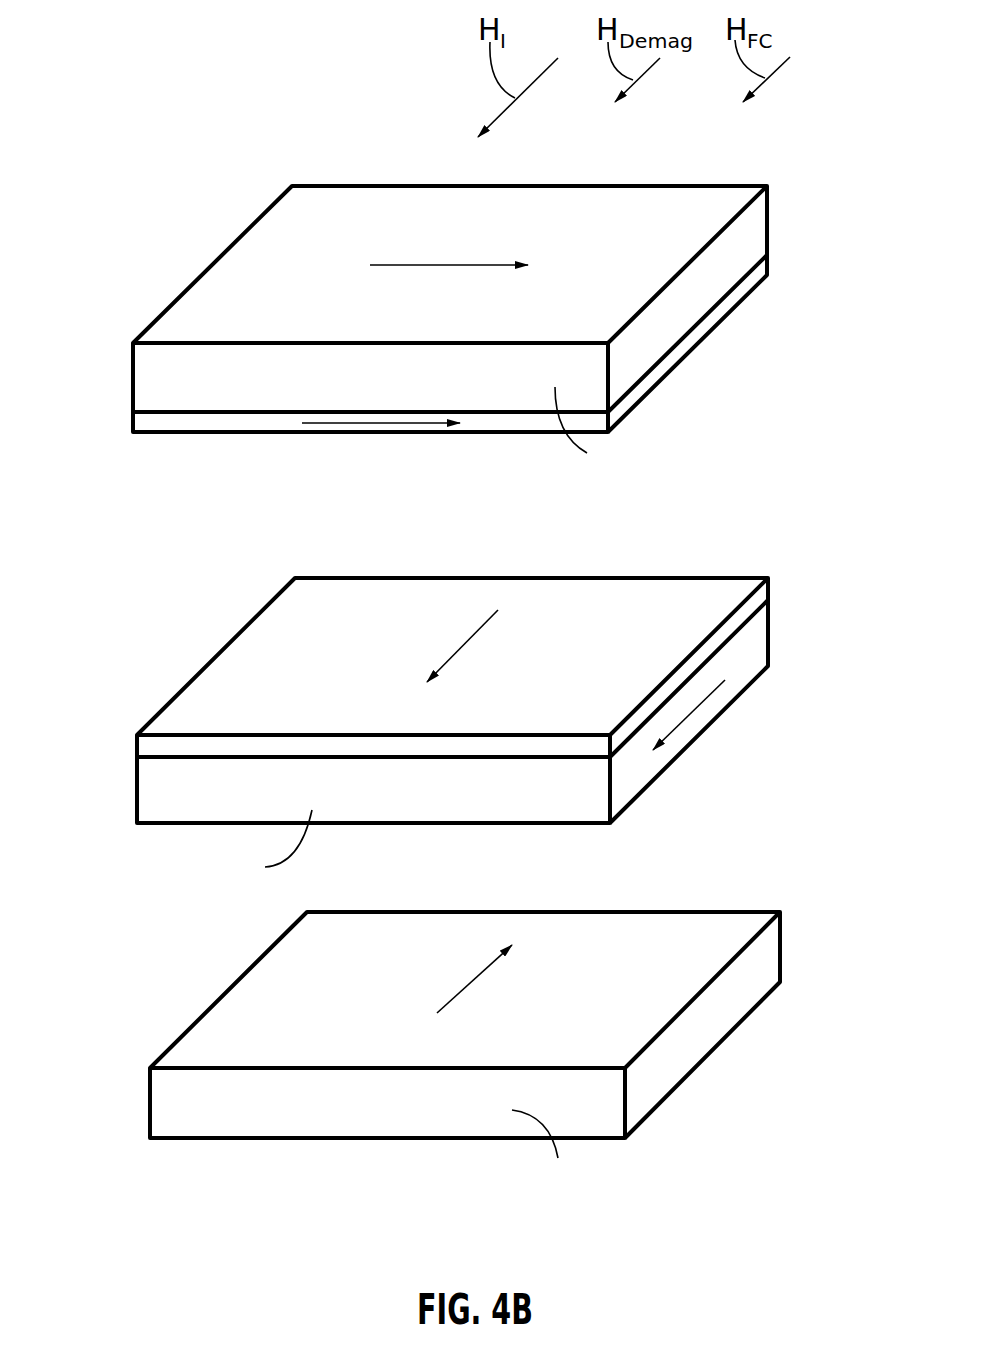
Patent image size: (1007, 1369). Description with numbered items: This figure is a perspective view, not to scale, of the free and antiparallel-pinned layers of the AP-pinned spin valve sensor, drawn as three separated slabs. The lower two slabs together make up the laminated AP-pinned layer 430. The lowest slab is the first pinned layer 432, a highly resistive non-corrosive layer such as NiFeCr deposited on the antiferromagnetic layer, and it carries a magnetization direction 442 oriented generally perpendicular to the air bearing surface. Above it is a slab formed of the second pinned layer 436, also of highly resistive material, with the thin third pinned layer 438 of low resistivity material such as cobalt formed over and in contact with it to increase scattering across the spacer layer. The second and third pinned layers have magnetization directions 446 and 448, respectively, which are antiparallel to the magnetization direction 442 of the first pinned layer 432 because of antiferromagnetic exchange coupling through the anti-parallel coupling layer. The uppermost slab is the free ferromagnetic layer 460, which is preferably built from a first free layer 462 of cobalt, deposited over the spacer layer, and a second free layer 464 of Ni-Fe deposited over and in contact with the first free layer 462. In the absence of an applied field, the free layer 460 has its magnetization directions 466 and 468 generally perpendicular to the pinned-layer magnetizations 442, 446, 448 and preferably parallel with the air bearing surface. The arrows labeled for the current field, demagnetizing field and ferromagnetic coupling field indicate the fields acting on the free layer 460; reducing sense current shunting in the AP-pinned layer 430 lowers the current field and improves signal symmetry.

The laminated AP-pinned layer 430 is at (125, 1140).
The first pinned layer 432 is at (585, 1032).
The second pinned layer 436 is at (558, 778).
The third pinned layer 438 is at (713, 600).
The magnetization direction of first pinned layer 442 is at (460, 985).
The magnetization direction of second pinned layer 446 is at (700, 707).
The magnetization direction of third pinned layer 448 is at (468, 637).
The free ferromagnetic layer 460 is at (122, 345).
The first free layer 462 is at (688, 342).
The second free layer 464 is at (710, 208).
The magnetization direction of free layer 466 is at (383, 423).
The magnetization direction of free layer 468 is at (413, 265).